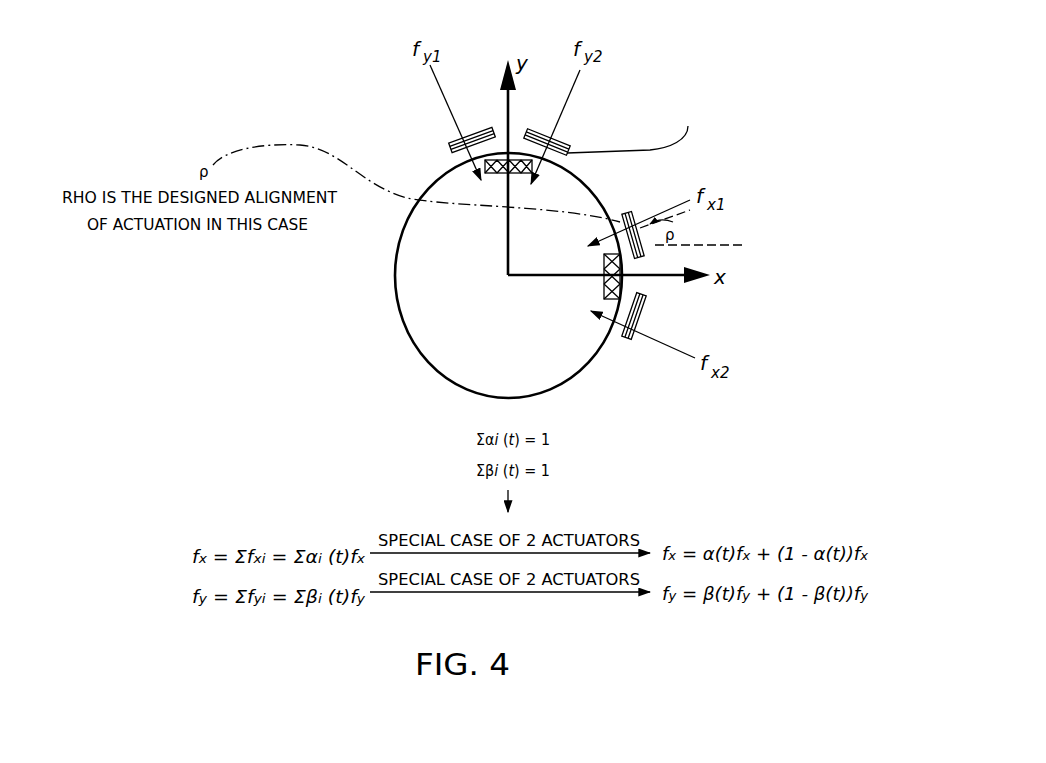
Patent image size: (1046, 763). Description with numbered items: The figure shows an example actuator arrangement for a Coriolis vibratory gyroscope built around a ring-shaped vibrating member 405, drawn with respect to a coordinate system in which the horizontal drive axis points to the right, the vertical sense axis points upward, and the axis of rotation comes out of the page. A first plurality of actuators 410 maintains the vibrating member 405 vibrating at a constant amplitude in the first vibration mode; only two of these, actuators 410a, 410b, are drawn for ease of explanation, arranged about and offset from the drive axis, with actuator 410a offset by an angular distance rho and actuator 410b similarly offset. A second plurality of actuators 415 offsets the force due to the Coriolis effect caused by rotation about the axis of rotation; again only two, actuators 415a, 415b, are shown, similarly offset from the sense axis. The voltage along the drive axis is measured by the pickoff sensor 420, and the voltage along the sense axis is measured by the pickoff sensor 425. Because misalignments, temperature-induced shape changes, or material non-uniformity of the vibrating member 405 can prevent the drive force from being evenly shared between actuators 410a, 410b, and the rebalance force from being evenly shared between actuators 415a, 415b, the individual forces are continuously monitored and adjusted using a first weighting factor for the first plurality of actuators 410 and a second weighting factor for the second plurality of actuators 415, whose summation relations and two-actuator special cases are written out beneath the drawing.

The vibrating member 405 is at (396, 300).
The first plurality of actuators 410 is at (701, 282).
The actuator 410a is at (630, 340).
The actuator 410b is at (627, 212).
The second plurality of actuators 415 is at (507, 101).
The actuator 415a is at (566, 148).
The actuator 415b is at (451, 150).
The sensor (pickoff for drive axis) 420 is at (603, 288).
The sensor (pickoff for sense axis) 425 is at (635, 129).